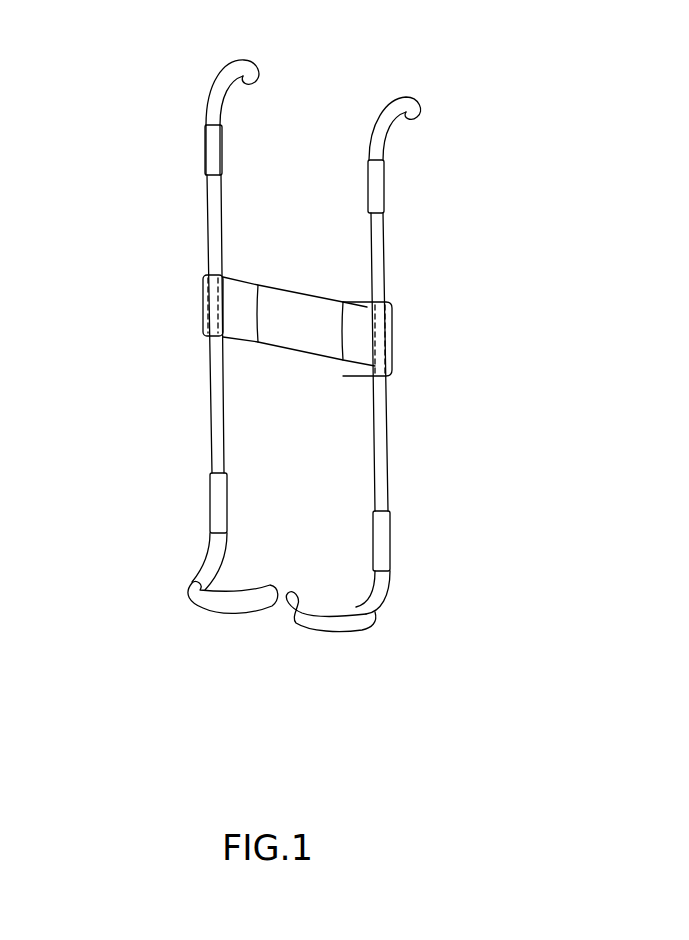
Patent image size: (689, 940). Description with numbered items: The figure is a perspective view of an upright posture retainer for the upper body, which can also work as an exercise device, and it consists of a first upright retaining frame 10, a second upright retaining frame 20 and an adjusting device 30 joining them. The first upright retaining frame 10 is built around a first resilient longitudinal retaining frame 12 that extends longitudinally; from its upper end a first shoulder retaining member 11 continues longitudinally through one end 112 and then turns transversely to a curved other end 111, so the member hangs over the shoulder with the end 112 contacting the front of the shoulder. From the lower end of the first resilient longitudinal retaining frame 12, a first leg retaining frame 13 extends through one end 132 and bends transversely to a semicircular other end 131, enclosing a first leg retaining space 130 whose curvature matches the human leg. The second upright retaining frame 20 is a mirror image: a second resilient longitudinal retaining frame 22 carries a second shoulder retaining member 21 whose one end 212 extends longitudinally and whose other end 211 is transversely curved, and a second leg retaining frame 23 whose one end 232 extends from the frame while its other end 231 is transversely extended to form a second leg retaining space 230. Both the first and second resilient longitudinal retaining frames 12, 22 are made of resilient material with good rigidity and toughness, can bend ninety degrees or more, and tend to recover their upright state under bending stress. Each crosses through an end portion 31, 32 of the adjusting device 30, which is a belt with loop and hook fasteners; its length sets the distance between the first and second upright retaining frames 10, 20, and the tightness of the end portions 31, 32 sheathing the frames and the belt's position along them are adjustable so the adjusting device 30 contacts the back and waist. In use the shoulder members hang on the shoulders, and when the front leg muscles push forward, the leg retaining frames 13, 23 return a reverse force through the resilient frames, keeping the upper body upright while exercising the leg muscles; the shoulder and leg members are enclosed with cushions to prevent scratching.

The first upright retaining frame 10 is at (137, 81).
The first shoulder retaining member 11 is at (213, 100).
The other end of the first shoulder retaining member 111 is at (252, 62).
The one end of the first shoulder retaining member 112 is at (206, 162).
The first resilient longitudinal retaining frame 12 is at (211, 236).
The first leg retaining frame 13 is at (216, 606).
The first leg retaining space 130 is at (236, 586).
The other end of the first leg retaining frame 131 is at (270, 586).
The one end of the first leg retaining frame 132 is at (216, 541).
The second upright retaining frame 20 is at (492, 158).
The second shoulder retaining member 21 is at (385, 146).
The other end of the second shoulder retaining member 211 is at (410, 105).
The one end of the second shoulder retaining member 212 is at (378, 207).
The second resilient longitudinal retaining frame 22 is at (383, 270).
The second leg retaining frame 23 is at (331, 632).
The second leg retaining space 230 is at (337, 608).
The other end of the second leg retaining frame 231 is at (297, 597).
The one end of the second leg retaining frame 232 is at (383, 584).
The adjusting device 30 is at (119, 314).
The end portion of the adjusting device 31 is at (204, 306).
The end portion of the adjusting device 32 is at (393, 345).